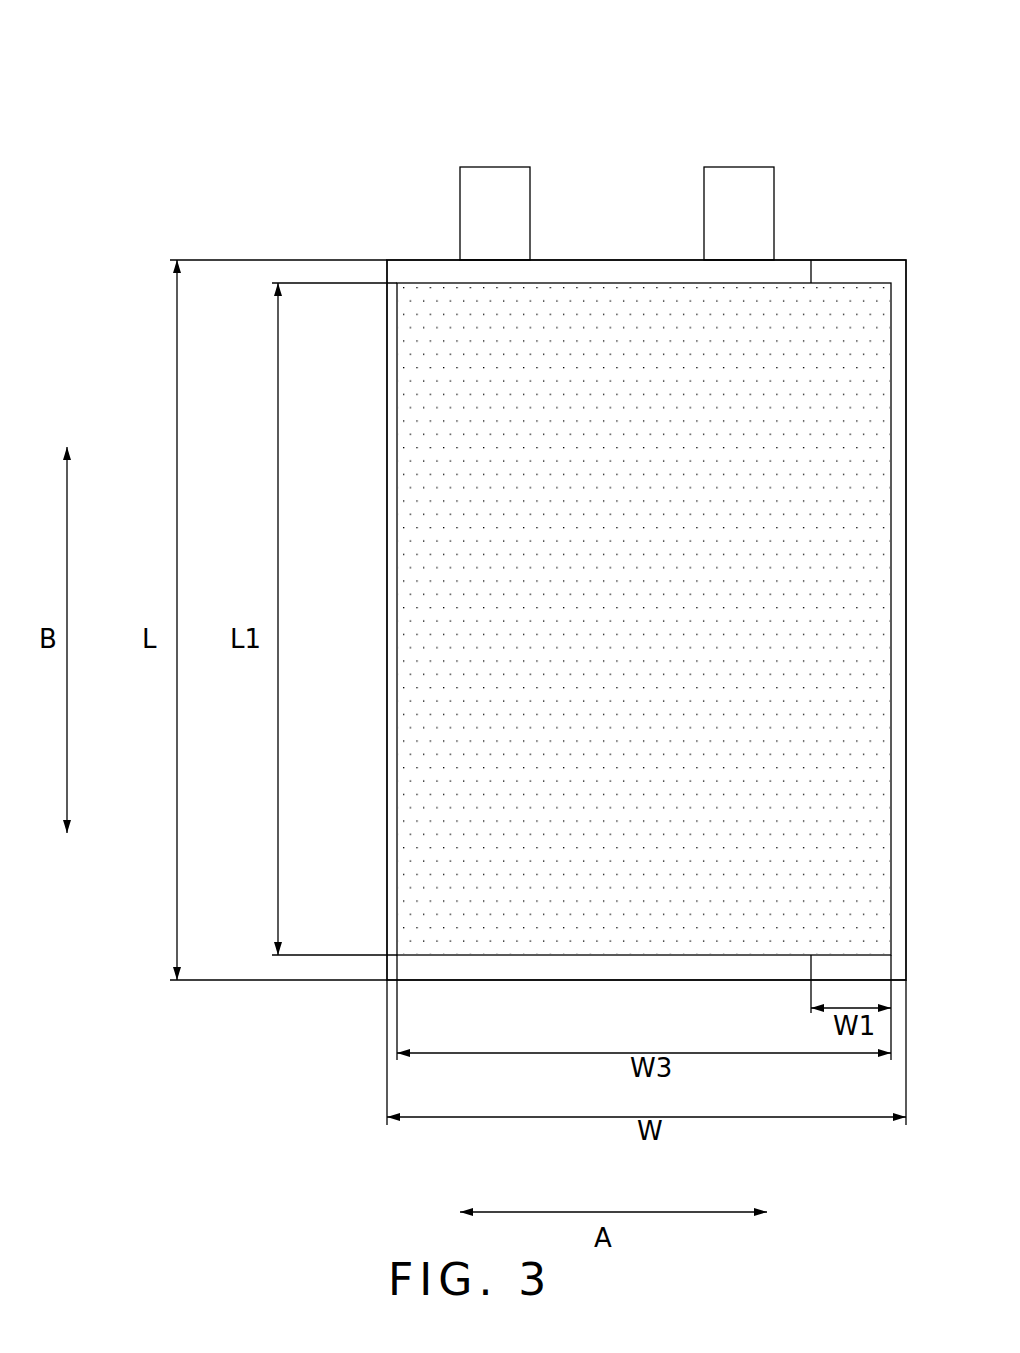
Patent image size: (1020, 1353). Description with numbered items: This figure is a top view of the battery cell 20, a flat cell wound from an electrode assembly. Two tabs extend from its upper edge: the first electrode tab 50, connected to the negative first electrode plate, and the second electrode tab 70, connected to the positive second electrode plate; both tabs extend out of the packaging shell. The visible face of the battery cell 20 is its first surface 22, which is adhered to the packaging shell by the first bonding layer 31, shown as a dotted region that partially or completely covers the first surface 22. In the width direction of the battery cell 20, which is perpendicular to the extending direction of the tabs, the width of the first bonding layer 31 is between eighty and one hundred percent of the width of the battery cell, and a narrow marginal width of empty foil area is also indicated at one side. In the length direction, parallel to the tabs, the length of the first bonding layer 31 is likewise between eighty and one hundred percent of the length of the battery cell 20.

The battery cell 20 is at (578, 39).
The first surface 22 is at (392, 602).
The first bonding layer 31 is at (410, 710).
The first electrode tab 50 is at (490, 185).
The second electrode tab 70 is at (732, 190).